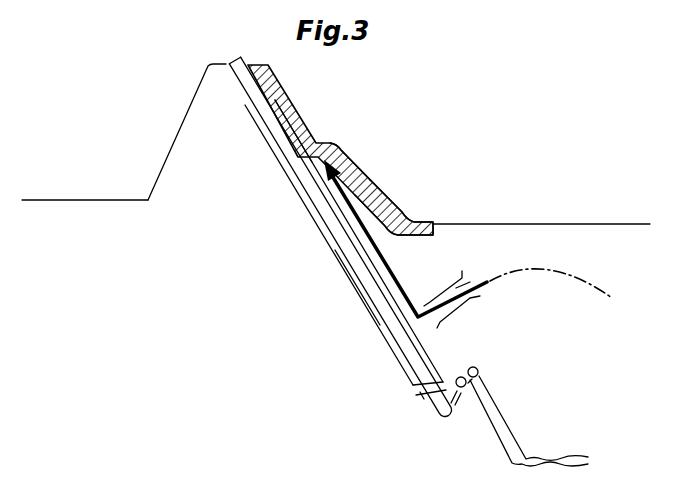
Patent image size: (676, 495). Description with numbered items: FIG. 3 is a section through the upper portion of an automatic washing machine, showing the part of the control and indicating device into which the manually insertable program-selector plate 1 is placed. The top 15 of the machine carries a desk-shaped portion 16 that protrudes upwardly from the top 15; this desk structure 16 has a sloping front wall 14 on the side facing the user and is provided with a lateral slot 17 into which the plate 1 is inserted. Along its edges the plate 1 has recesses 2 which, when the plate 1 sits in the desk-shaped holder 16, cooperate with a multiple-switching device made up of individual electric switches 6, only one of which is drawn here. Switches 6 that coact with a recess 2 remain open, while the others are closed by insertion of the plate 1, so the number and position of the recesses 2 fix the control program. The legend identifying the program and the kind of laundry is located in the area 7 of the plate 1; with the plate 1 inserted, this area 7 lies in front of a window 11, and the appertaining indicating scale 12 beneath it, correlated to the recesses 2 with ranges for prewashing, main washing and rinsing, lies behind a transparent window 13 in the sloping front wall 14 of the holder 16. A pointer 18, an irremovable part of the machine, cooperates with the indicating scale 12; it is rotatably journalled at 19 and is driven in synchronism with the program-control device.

The selector plate 1 is at (376, 290).
The recess 2 is at (446, 396).
The electric switch 6 is at (459, 396).
The designation area 7 is at (276, 112).
The window 11 is at (292, 118).
The indicating scale 12 is at (305, 155).
The transparent window 13 is at (342, 161).
The sloping front wall 14 is at (373, 207).
The top 15 is at (491, 224).
The desk-shaped portion 16 is at (188, 109).
The lateral slot 17 is at (344, 251).
The pointer 18 is at (344, 192).
The pivot 19 is at (462, 300).